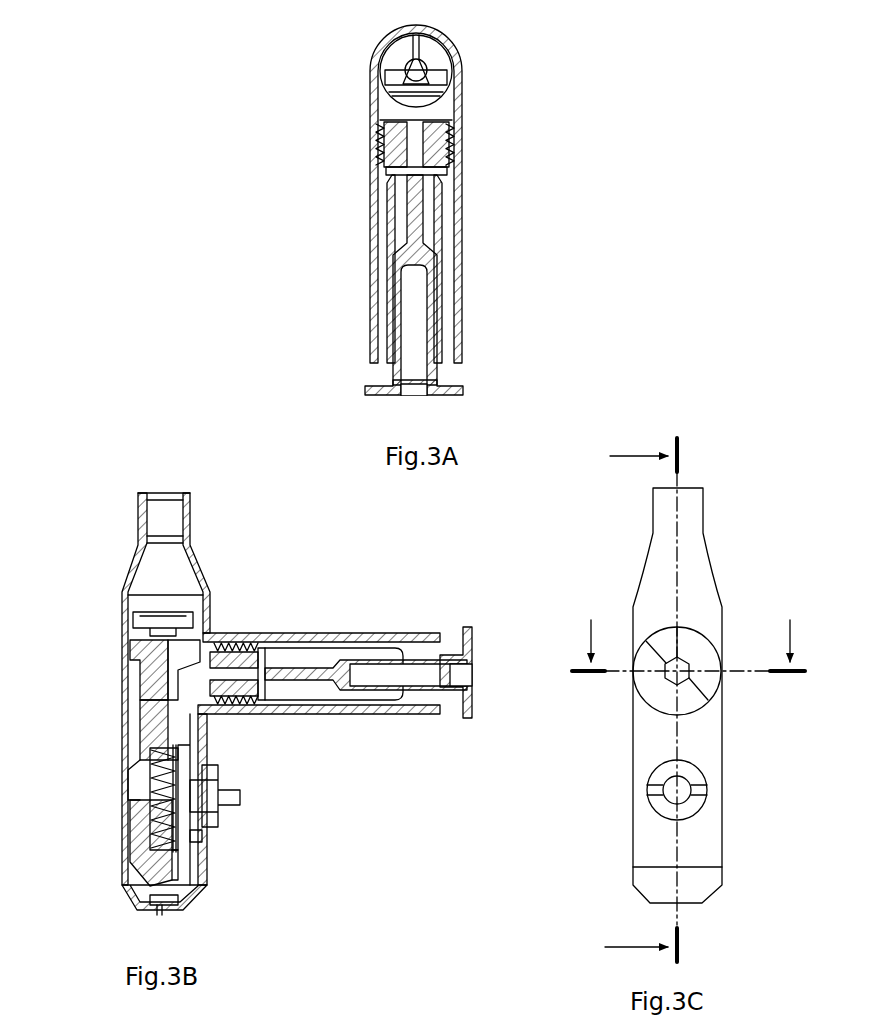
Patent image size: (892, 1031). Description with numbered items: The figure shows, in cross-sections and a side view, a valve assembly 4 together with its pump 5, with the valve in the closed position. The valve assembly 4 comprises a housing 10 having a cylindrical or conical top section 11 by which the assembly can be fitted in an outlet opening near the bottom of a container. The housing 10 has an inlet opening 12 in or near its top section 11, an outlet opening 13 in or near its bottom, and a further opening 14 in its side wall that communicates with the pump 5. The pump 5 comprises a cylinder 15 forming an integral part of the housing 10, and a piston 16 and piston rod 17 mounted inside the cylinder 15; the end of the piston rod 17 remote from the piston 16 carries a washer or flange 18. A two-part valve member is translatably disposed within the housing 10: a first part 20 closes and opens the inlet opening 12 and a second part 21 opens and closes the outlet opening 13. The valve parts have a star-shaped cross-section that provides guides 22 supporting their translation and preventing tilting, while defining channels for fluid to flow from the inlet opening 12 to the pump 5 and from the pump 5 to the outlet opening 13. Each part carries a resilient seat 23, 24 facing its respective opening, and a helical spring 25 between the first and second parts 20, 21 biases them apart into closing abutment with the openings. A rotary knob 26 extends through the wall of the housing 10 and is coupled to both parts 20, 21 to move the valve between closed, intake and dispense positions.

In FIG. 3A, the valve assembly 4 is at (449, 184).
In FIG. 3B, the valve assembly 4 is at (246, 701).
In FIG. 3C, the valve assembly 4 is at (690, 698).
In FIG. 3A, the pump 5 is at (448, 200).
In FIG. 3B, the pump 5 is at (264, 710).
In FIG. 3A, the housing 10 is at (456, 56).
In FIG. 3B, the housing 10 is at (123, 706).
In FIG. 3C, the housing 10 is at (707, 742).
In FIG. 3B, the top section 11 is at (143, 556).
In FIG. 3C, the top section 11 is at (697, 584).
In FIG. 3B, the inlet opening 12 is at (150, 612).
In FIG. 3B, the outlet opening 13 is at (157, 918).
In FIG. 3B, the further opening 14 is at (172, 660).
In FIG. 3A, the cylinder 15 is at (455, 192).
In FIG. 3B, the cylinder 15 is at (305, 636).
In FIG. 3A, the piston 16 is at (450, 143).
In FIG. 3B, the piston 16 is at (236, 640).
In FIG. 3A, the piston rod 17 is at (428, 298).
In FIG. 3B, the piston rod 17 is at (290, 690).
In FIG. 3A, the flange 18 is at (455, 388).
In FIG. 3B, the flange 18 is at (466, 627).
In FIG. 3C, the flange 18 is at (706, 688).
In FIG. 3B, the first part 20 is at (152, 732).
In FIG. 3B, the second part 21 is at (150, 845).
In FIG. 3B, the guides 22 is at (150, 815).
In FIG. 3B, the resilient seat 23 is at (192, 630).
In FIG. 3B, the resilient seat 24 is at (180, 900).
In FIG. 3B, the helical spring 25 is at (205, 838).
In FIG. 3B, the rotary knob 26 is at (215, 776).
In FIG. 3C, the rotary knob 26 is at (693, 776).